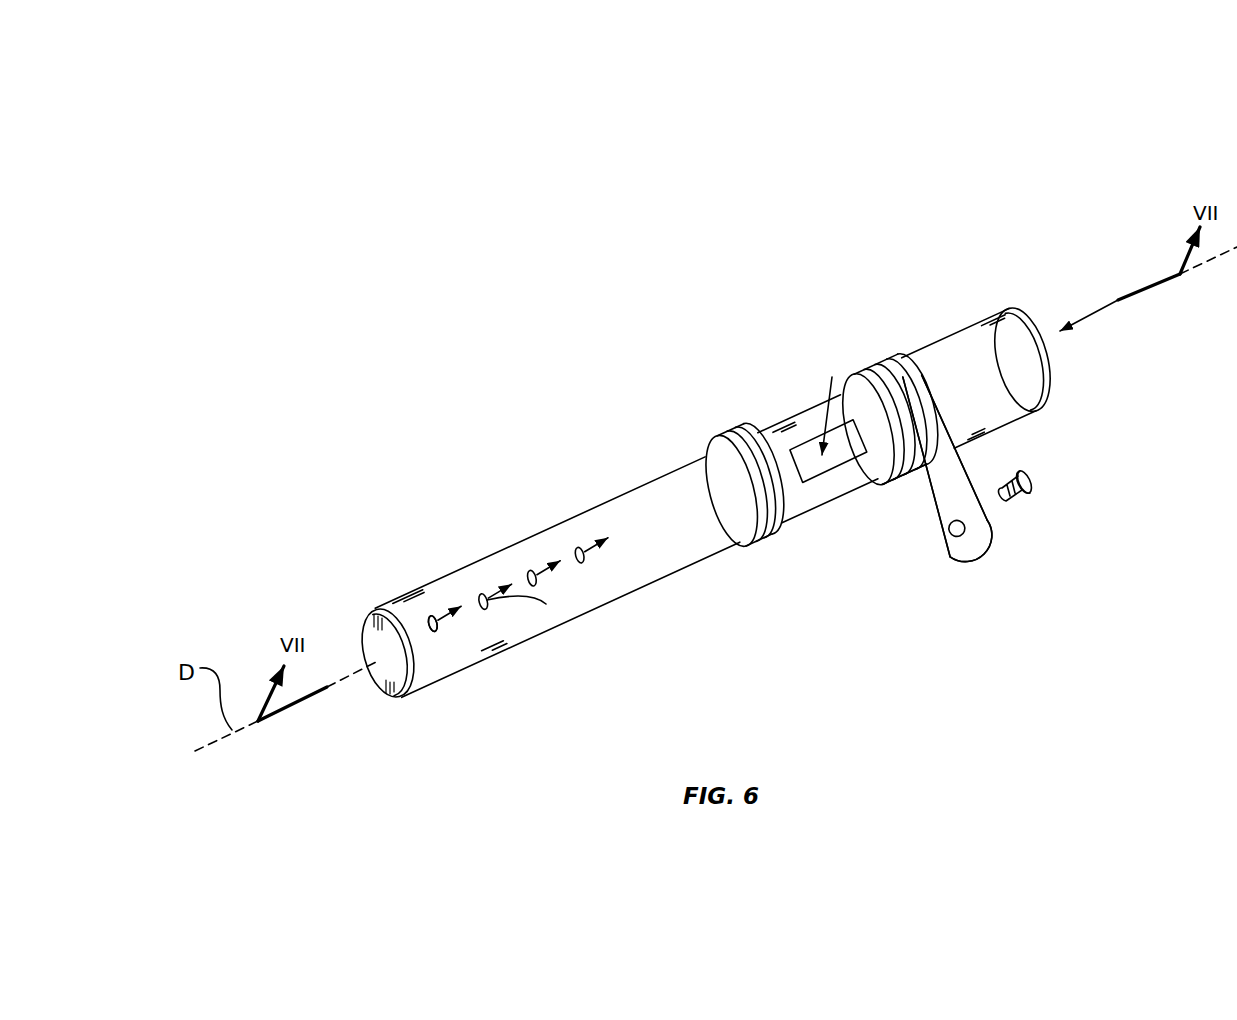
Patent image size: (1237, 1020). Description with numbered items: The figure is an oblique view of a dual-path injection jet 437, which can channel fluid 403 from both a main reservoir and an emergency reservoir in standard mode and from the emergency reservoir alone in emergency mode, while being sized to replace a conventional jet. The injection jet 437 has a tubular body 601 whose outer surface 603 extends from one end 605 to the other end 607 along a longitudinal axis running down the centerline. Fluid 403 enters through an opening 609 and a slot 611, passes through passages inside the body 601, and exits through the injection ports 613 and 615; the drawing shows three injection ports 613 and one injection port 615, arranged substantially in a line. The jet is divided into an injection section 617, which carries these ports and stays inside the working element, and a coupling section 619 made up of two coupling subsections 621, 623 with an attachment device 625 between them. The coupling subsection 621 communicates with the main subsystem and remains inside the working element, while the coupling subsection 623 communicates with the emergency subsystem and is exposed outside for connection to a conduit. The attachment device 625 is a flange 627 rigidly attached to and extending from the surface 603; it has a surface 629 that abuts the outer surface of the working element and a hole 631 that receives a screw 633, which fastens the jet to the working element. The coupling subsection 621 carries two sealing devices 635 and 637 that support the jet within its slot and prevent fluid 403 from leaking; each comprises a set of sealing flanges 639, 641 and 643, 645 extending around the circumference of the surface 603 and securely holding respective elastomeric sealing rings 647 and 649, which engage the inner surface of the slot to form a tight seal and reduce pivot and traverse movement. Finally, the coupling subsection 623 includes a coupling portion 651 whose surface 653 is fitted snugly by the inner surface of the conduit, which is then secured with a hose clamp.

The fluid 403 is at (604, 541).
The injection jet 437 is at (389, 113).
The body 601 is at (598, 498).
The outer surface 603 is at (651, 568).
The end 605 is at (363, 636).
The end 607 is at (1033, 312).
The opening 609 is at (1064, 362).
The slot 611 is at (838, 468).
The injection ports 613 is at (546, 604).
The injection port 615 is at (436, 629).
The injection section 617 is at (452, 306).
The coupling section 619 is at (758, 141).
The coupling subsection 621 is at (758, 270).
The coupling subsection 623 is at (893, 216).
The attachment device 625 is at (978, 600).
The flange 627 is at (975, 557).
The surface 629 is at (978, 522).
The hole 631 is at (955, 538).
The screw 633 is at (1031, 492).
The sealing device 635 is at (770, 553).
The sealing device 637 is at (904, 506).
The sealing flange 639 is at (712, 448).
The sealing flange 641 is at (746, 430).
The sealing flange 643 is at (852, 388).
The sealing flange 645 is at (882, 368).
The sealing ring 647 is at (730, 438).
The sealing ring 649 is at (870, 368).
The coupling portion 651 is at (1034, 412).
The surface 653 is at (996, 410).